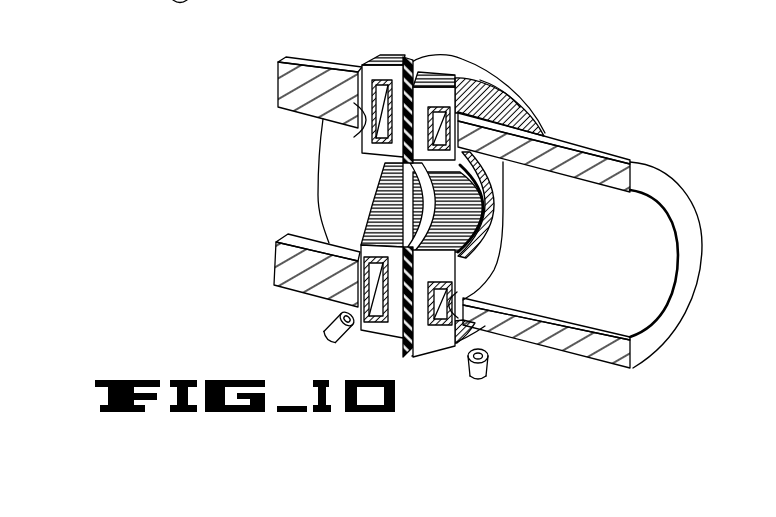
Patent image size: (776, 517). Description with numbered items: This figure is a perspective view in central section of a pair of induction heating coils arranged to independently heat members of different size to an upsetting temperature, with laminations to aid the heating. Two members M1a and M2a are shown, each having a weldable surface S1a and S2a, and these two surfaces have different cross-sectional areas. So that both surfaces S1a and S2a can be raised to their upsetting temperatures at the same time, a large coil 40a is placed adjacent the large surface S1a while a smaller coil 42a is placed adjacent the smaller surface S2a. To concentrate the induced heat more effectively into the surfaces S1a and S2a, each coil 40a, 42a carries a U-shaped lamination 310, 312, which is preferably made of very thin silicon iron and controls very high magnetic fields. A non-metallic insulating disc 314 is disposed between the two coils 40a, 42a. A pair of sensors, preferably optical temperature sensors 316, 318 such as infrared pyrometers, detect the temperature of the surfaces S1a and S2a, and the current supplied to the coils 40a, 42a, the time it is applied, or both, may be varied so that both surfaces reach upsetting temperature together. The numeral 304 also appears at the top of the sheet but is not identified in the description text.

The magnetic coupling assembly 304 is at (432, 178).
The U-shaped lamination 310 is at (396, 58).
The U-shaped lamination 312 is at (497, 80).
The non-metallic insulating disc 314 is at (450, 56).
The optical temperature sensor 316 is at (337, 317).
The optical temperature sensor 318 is at (489, 367).
The large coil 40a is at (360, 263).
The smaller coil 42a is at (513, 100).
The member M1a is at (287, 87).
The member M2a is at (638, 158).
The weldable surface S1a is at (360, 135).
The weldable surface S2a is at (457, 296).